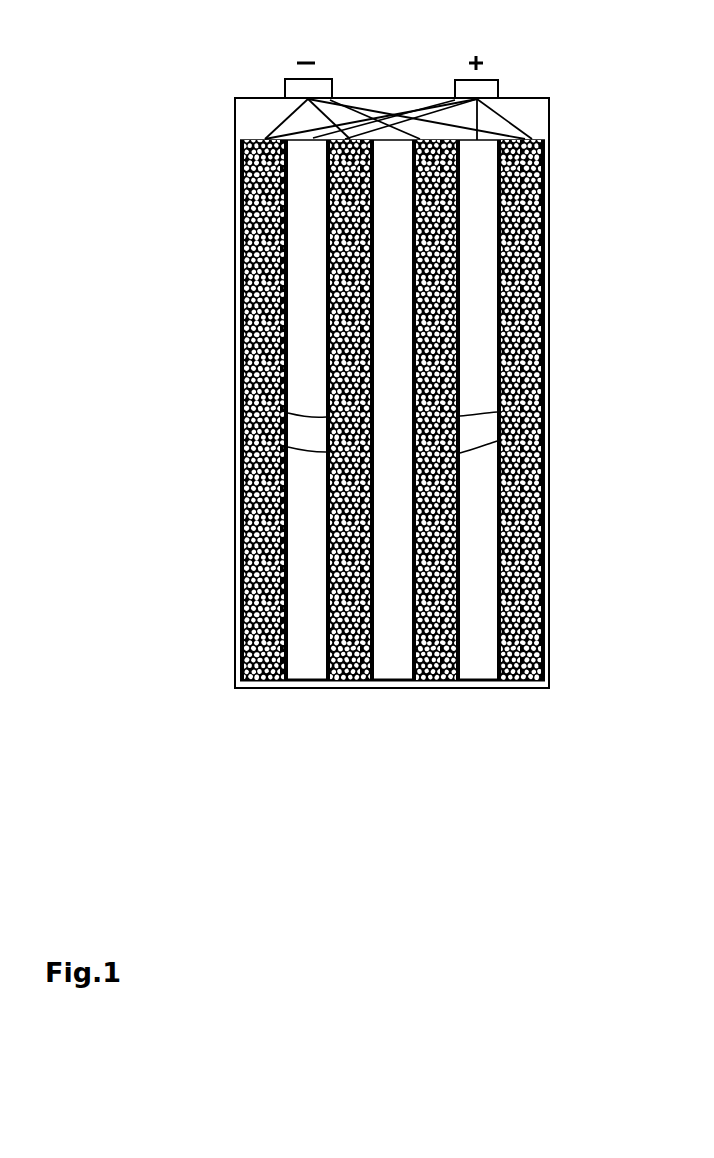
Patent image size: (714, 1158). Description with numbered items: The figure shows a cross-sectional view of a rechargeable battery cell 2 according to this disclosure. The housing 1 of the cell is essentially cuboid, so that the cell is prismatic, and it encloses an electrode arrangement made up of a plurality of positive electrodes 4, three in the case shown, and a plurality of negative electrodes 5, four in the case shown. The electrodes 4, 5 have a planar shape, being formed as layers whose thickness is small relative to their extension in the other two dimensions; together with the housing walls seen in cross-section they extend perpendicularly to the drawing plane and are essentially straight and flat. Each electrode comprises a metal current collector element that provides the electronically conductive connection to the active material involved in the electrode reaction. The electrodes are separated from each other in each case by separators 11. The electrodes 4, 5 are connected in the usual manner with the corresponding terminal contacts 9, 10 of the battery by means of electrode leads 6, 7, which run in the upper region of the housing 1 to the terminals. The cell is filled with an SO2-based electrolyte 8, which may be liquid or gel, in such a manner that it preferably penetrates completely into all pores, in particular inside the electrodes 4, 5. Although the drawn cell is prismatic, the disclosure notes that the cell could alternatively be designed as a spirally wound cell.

The housing 1 is at (549, 215).
The rechargeable battery cell 2 is at (222, 284).
The positive electrodes 4 is at (307, 662).
The negative electrodes 5 is at (270, 680).
The electrode leads 6 is at (497, 111).
The electrode leads 7 is at (288, 111).
The SO2-based electrolyte 8 is at (483, 306).
The terminal contacts 9 is at (490, 87).
The terminal contacts 10 is at (322, 85).
The separators 11 is at (250, 402).